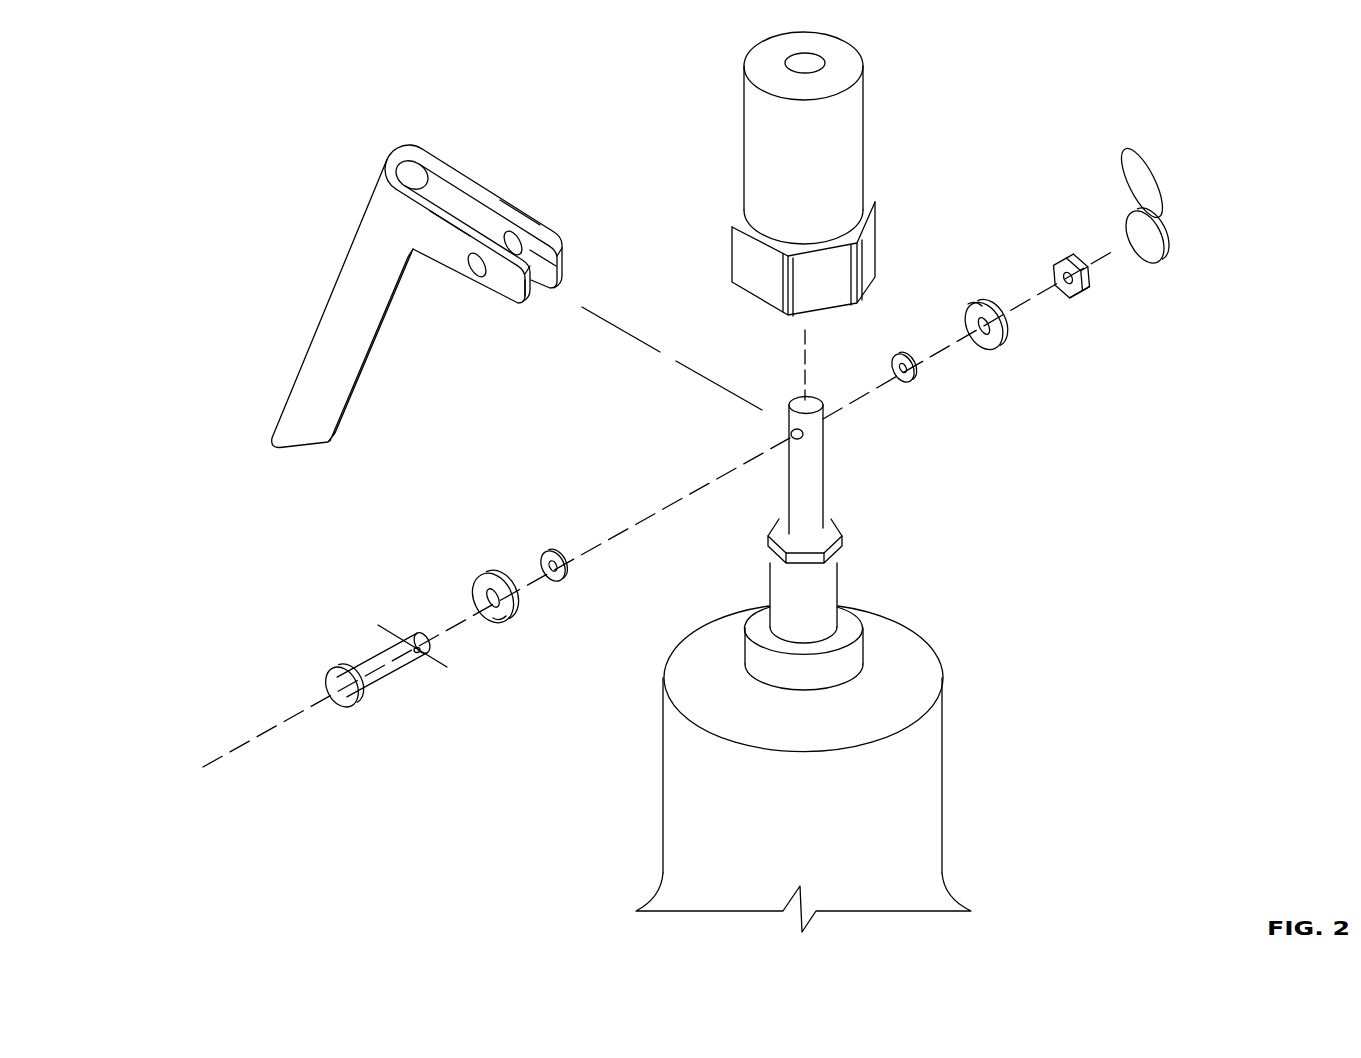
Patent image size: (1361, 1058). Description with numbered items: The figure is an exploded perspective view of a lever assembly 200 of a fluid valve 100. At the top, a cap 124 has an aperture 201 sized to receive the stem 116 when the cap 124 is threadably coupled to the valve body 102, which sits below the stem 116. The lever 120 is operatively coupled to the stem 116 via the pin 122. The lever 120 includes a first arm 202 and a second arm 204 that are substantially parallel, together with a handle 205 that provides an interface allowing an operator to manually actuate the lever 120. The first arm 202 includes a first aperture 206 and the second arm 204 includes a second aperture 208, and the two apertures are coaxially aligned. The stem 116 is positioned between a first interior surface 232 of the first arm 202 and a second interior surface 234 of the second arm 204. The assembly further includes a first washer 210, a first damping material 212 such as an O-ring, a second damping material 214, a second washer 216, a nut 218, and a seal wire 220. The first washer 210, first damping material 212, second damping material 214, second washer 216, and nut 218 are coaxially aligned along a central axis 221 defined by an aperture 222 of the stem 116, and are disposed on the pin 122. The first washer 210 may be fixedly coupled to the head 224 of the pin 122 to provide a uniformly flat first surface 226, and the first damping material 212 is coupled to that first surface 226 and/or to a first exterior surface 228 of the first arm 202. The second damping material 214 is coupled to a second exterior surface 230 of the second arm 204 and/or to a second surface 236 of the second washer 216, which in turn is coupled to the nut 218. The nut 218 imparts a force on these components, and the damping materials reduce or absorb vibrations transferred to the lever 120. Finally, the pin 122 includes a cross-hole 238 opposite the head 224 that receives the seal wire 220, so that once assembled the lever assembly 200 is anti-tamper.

The fluid valve 100 is at (1050, 651).
The valve body 102 is at (946, 790).
The stem 116 is at (826, 440).
The lever 120 is at (333, 230).
The pin 122 is at (376, 681).
The cap 124 is at (835, 163).
The lever assembly 200 is at (203, 60).
The aperture 201 is at (808, 63).
The first arm 202 is at (452, 270).
The second arm 204 is at (504, 204).
The handle 205 is at (302, 360).
The first aperture 206 is at (477, 278).
The second aperture 208 is at (520, 228).
The first washer 210 is at (500, 614).
The first damping material 212 is at (560, 582).
The second damping material 214 is at (908, 383).
The second washer 216 is at (998, 348).
The nut 218 is at (1084, 300).
The seal wire 220 is at (1150, 265).
The central axis 221 is at (255, 735).
The aperture 222 is at (795, 440).
The head 224 is at (338, 670).
The first surface 226 is at (510, 572).
The first exterior surface 228 is at (500, 288).
The second exterior surface 230 is at (544, 224).
The first interior surface 232 is at (538, 295).
The second interior surface 234 is at (543, 262).
The second surface 236 is at (972, 312).
The cross-hole 238 is at (418, 658).